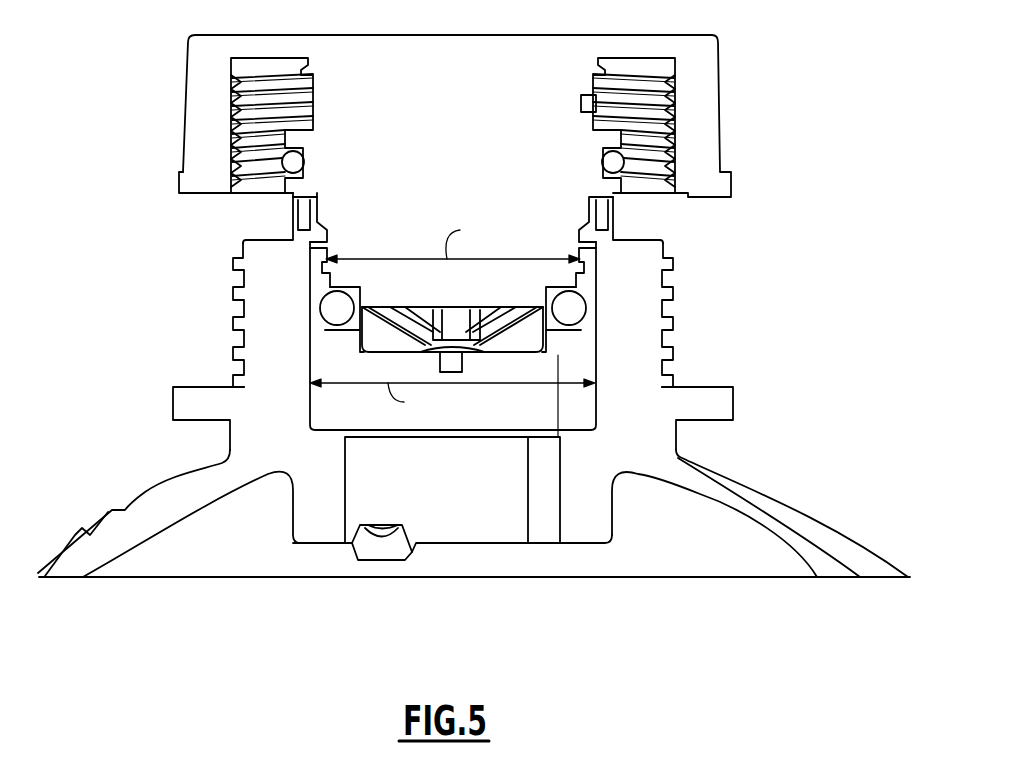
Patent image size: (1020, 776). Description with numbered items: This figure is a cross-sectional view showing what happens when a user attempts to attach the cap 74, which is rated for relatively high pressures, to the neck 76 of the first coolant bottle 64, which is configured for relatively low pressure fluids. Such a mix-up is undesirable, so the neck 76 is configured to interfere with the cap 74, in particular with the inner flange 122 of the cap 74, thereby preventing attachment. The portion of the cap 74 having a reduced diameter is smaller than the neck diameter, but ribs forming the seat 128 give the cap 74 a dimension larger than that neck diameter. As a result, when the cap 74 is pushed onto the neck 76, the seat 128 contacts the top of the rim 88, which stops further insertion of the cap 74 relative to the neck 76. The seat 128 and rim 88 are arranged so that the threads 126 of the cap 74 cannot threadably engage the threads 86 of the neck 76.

The first coolant bottle 64 is at (114, 404).
The cap 74 is at (760, 91).
The neck 76 is at (722, 278).
The threads 86 is at (672, 268).
The rim 88 is at (290, 225).
The inner flange 122 is at (464, 174).
The threads 126 is at (672, 93).
The seat 128 is at (253, 198).